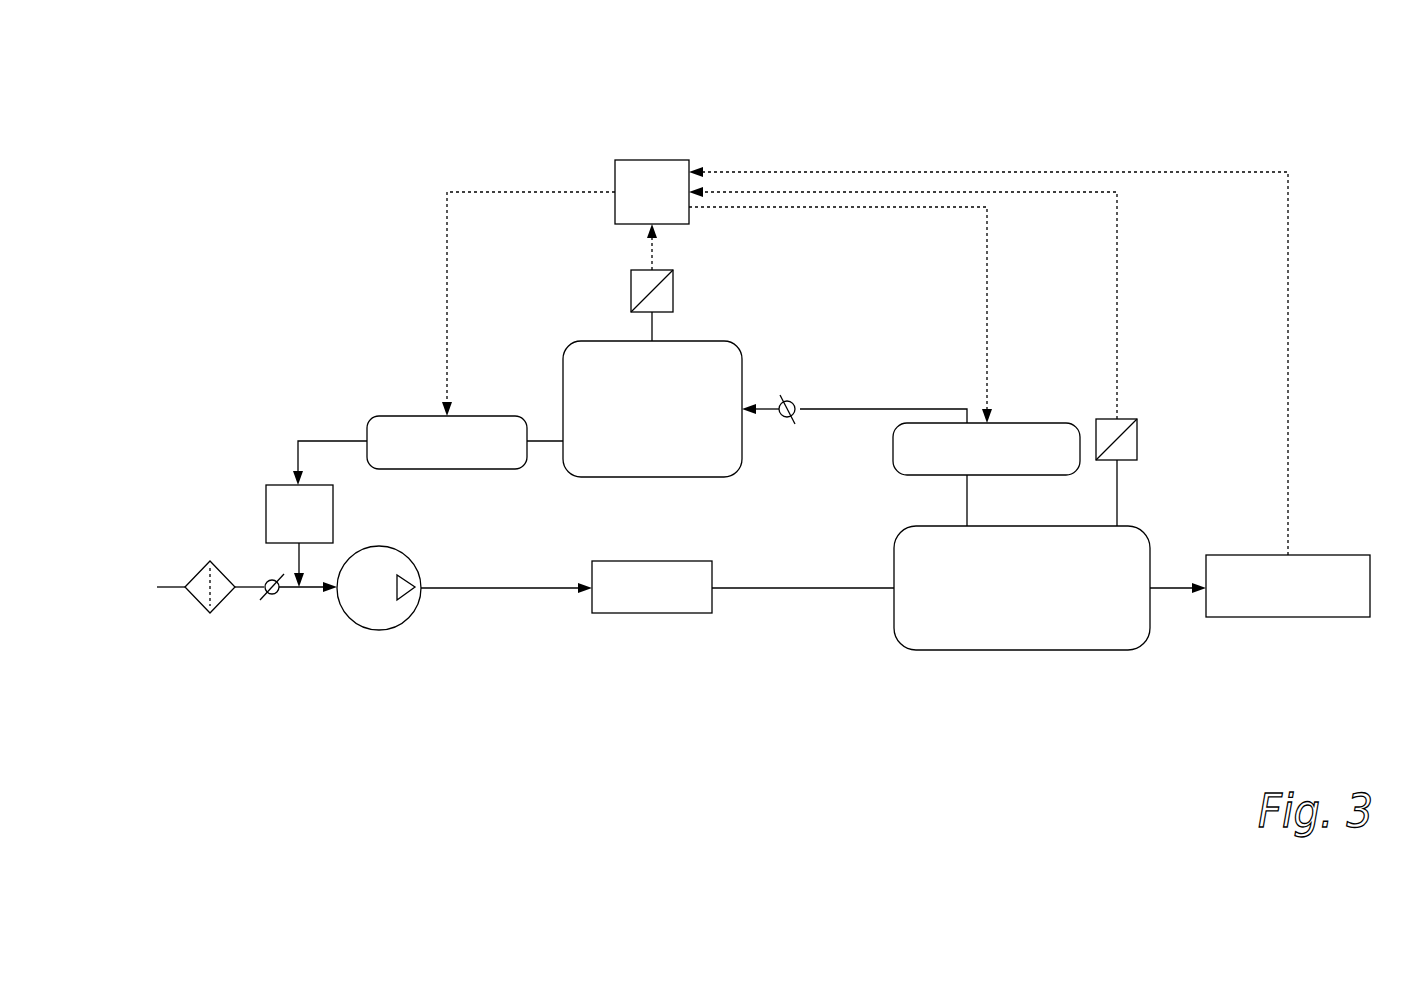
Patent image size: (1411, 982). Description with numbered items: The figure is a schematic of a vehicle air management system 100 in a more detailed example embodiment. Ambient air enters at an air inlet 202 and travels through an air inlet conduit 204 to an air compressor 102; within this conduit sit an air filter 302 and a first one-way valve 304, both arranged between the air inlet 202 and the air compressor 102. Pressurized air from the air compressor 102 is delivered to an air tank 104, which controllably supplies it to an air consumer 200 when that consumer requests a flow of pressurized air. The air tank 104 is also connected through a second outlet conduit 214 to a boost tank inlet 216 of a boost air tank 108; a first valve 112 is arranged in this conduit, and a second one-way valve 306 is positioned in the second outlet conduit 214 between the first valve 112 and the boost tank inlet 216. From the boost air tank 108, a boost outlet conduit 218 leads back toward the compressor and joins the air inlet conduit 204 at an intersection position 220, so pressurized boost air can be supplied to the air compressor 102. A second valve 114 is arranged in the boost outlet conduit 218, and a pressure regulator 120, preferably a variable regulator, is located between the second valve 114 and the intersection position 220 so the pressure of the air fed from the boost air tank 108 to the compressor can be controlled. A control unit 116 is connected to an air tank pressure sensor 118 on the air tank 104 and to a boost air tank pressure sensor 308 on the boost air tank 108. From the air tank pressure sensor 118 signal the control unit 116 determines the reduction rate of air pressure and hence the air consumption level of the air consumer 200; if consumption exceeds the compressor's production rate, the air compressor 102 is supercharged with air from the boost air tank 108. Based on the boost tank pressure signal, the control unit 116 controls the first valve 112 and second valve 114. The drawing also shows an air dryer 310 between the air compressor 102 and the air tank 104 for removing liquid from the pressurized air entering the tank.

The vehicle air management system 100 is at (322, 222).
The air compressor 102 is at (383, 631).
The air tank 104 is at (1030, 650).
The boost air tank 108 is at (708, 341).
The first valve 112 is at (1027, 423).
The second valve 114 is at (407, 416).
The control unit 116 is at (653, 159).
The air tank pressure sensor 118 is at (1137, 440).
The pressure regulator 120 is at (266, 515).
The air consumer 200 is at (1288, 617).
The air inlet 202 is at (157, 587).
The air inlet conduit 204 is at (291, 594).
The second outlet conduit 214 is at (878, 409).
The boost tank inlet 216 is at (745, 402).
The boost outlet conduit 218 is at (332, 438).
The intersection position 220 is at (305, 584).
The air filter 302 is at (190, 604).
The first one-way valve 304 is at (262, 580).
The second one-way valve 306 is at (795, 400).
The boost air tank pressure sensor 308 is at (631, 290).
The heater 310 is at (665, 613).